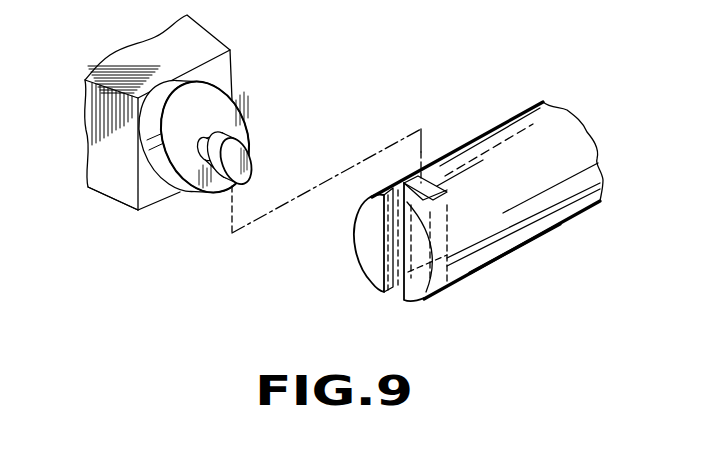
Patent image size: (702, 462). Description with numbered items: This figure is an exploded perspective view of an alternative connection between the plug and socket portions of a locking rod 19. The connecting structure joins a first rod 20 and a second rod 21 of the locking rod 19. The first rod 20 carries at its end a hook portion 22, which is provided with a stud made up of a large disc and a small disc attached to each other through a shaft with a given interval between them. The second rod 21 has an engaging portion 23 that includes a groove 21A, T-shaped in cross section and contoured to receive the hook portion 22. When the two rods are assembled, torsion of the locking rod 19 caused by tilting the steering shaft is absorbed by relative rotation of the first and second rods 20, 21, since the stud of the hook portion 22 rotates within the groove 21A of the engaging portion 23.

The locking rod 19 is at (105, 203).
The first rod 20 is at (203, 52).
The second rod 21 is at (497, 126).
The groove 21A is at (422, 188).
The hook portion 22 is at (246, 156).
The engaging portion 23 is at (375, 230).